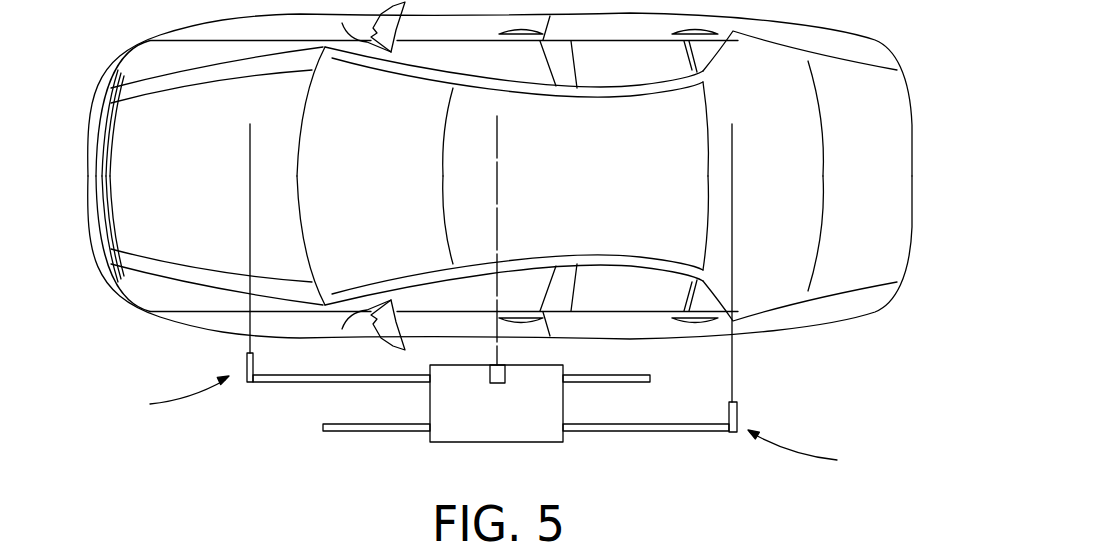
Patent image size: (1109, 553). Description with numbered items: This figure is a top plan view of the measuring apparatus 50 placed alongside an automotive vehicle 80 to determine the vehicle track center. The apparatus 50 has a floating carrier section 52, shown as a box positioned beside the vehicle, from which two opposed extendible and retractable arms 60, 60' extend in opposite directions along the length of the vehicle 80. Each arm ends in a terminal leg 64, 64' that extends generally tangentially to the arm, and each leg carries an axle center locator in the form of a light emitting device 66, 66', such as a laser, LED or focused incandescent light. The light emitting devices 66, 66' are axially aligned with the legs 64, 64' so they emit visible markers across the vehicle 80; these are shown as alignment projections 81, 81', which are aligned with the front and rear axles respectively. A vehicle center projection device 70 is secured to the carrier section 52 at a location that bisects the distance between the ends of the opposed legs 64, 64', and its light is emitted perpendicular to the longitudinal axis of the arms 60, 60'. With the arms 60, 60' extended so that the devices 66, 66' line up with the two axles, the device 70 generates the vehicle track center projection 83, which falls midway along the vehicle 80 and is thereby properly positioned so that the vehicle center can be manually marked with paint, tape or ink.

The apparatus 50 is at (493, 425).
The floating carrier section 52 is at (484, 424).
The extendible and retractable arm 60 is at (427, 414).
The extendible and retractable arm 60' is at (534, 460).
The terminal leg 64 is at (172, 397).
The terminal leg 64' is at (810, 451).
The light emitting device 66 is at (199, 368).
The light emitting device 66' is at (785, 417).
The vehicle center projection device 70 is at (507, 375).
The vehicle 80 is at (587, 184).
The alignment projection 81 is at (205, 238).
The alignment projection 81' is at (774, 263).
The vehicle track center projection 83 is at (497, 162).